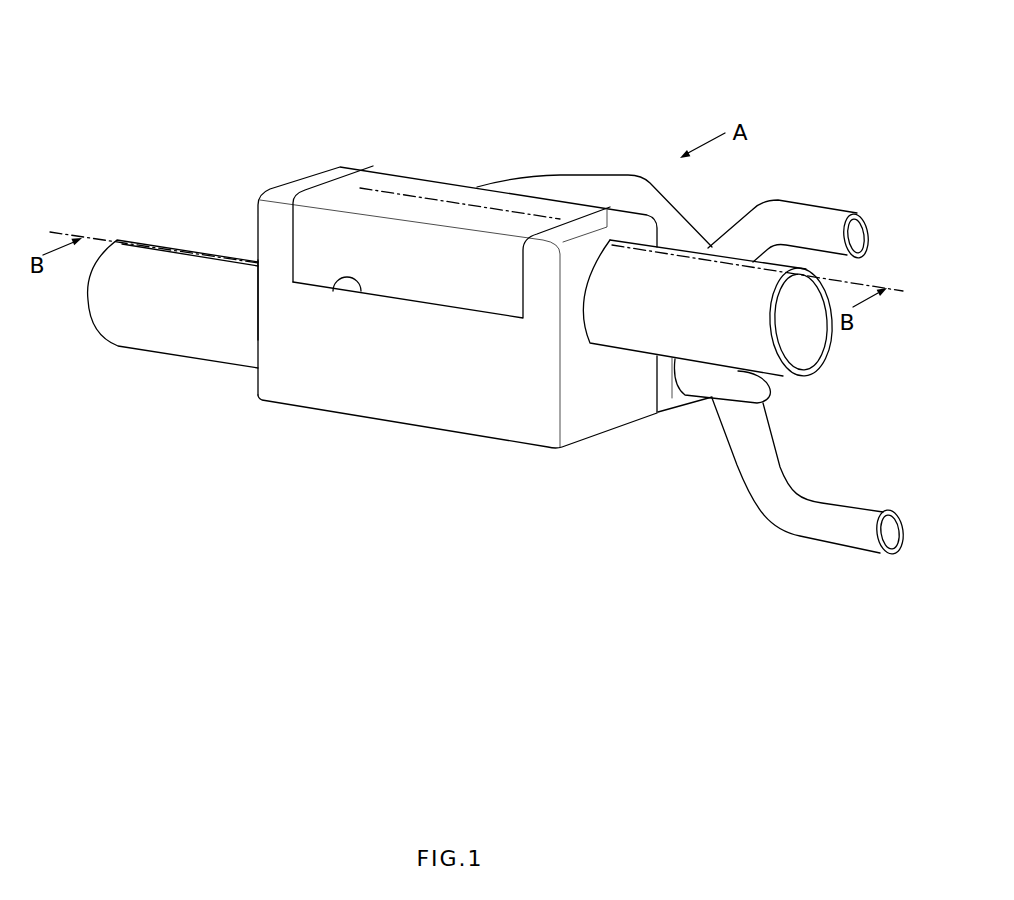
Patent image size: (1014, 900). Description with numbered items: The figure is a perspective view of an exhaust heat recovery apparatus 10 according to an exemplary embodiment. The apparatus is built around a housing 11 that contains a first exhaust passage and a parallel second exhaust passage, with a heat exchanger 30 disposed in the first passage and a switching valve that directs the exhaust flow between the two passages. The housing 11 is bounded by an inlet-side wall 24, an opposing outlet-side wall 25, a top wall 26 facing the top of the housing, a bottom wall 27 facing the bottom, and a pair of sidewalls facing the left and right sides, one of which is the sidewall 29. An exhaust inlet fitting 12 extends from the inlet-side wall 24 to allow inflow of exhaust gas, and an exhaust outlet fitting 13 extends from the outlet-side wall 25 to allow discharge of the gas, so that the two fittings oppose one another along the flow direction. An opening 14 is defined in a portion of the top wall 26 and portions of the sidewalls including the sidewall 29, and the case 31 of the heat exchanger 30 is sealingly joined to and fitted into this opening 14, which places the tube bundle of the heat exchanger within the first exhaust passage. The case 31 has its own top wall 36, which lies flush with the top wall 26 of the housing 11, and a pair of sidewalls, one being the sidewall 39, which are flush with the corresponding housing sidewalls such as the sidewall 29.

The exhaust heat recovery apparatus 10 is at (186, 47).
The housing 11 is at (378, 424).
The exhaust inlet fitting 12 is at (705, 345).
The exhaust outlet fitting 13 is at (157, 342).
The opening 14 is at (330, 292).
The inlet-side wall 24 is at (613, 413).
The outlet-side wall 25 is at (257, 333).
The top wall 26 is at (348, 172).
The bottom wall 27 is at (583, 445).
The sidewall 29 is at (498, 423).
The heat exchanger 30 is at (516, 140).
The case 31 is at (451, 180).
The top wall 36 is at (395, 185).
The sidewall 39 is at (468, 290).